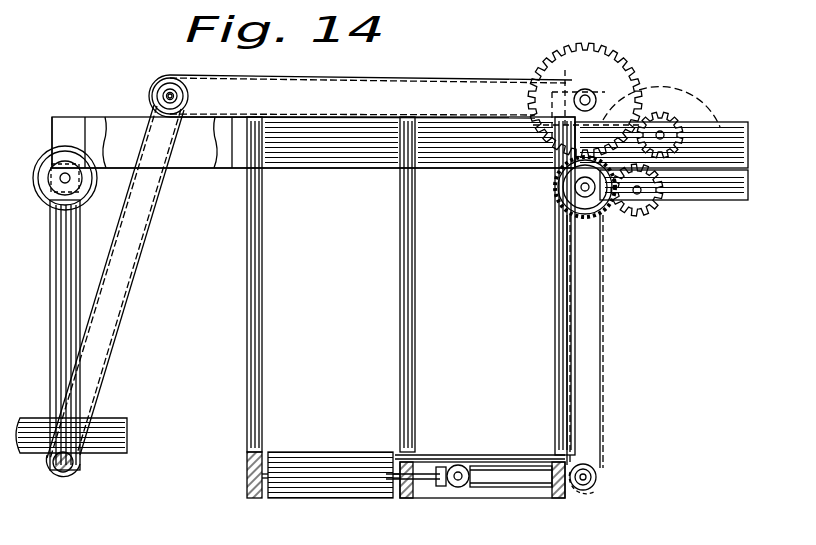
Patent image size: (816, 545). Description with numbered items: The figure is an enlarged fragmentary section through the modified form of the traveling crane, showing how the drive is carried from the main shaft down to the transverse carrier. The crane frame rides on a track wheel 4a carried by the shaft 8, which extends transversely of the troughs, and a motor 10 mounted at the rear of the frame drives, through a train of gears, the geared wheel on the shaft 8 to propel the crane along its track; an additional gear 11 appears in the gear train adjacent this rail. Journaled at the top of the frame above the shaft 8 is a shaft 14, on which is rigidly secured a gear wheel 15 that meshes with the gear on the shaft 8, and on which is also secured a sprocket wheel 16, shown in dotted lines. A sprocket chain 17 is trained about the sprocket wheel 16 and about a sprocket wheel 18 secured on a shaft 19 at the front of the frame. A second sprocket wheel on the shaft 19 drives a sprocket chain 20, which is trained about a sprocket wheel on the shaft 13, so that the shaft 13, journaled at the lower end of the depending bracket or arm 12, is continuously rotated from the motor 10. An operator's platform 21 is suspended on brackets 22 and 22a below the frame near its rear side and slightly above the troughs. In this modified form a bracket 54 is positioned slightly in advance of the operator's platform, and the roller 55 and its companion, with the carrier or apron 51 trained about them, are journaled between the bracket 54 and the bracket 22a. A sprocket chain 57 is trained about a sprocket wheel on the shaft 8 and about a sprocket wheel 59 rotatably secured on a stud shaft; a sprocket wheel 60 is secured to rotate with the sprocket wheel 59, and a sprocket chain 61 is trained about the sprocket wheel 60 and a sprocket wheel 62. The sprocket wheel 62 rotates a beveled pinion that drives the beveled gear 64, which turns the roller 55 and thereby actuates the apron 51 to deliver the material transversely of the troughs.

The track wheel 4a is at (50, 200).
The shaft 8 is at (65, 178).
The motor 10 is at (705, 112).
The gear 11 is at (639, 193).
The depending bracket or arm 12 is at (60, 303).
The shaft 13 is at (78, 470).
The shaft 14 is at (586, 97).
The gear wheel 15 is at (618, 67).
The sprocket wheel 16 is at (530, 76).
The sprocket chain 17 is at (404, 77).
The sprocket wheel 18 is at (186, 96).
The shaft 19 is at (165, 93).
The sprocket chain 20 is at (138, 298).
The operator's platform 21 is at (486, 455).
The bracket 22 is at (560, 312).
The bracket 22a is at (402, 325).
The carrier or apron 51 is at (352, 494).
The bracket 54 is at (250, 343).
The roller 55 is at (418, 482).
The sprocket chain 57 is at (603, 323).
The sprocket wheel 59 is at (592, 466).
The sprocket wheel 60 is at (597, 484).
The sprocket chain 61 is at (526, 490).
The sprocket wheel 62 is at (460, 483).
The beveled gear 64 is at (445, 488).